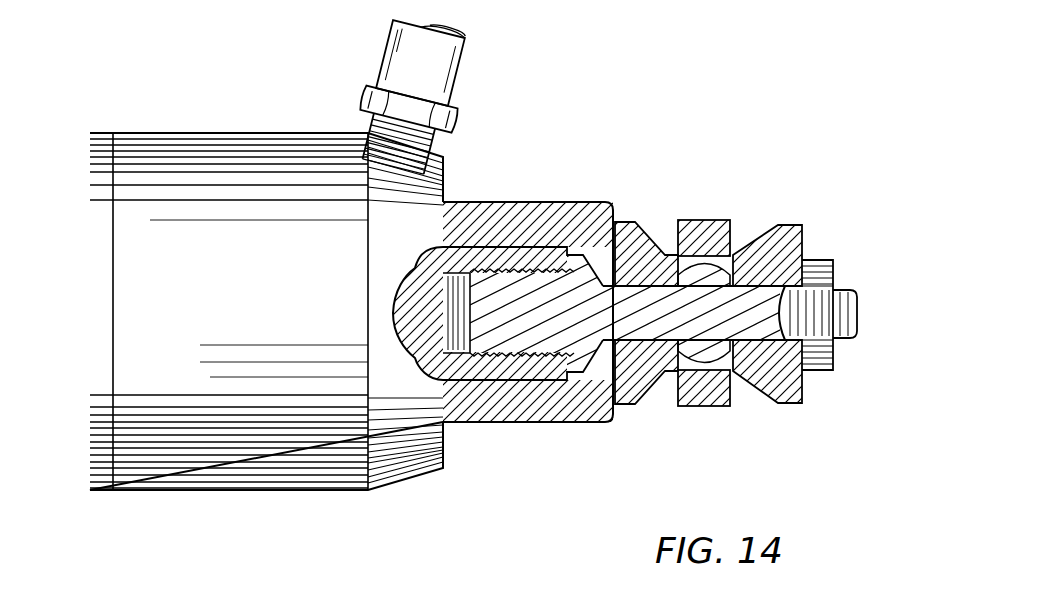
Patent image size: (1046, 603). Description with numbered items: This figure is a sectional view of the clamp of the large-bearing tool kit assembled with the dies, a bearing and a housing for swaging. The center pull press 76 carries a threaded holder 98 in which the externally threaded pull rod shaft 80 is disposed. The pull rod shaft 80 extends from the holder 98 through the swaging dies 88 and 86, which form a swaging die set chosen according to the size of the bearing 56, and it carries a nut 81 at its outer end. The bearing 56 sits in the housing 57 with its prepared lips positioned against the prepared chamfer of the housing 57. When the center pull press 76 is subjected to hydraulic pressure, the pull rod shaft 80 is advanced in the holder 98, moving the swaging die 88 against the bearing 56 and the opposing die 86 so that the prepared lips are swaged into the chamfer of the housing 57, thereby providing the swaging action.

The center pull press 76 is at (140, 283).
The threaded holder 98 is at (500, 252).
The pull rod shaft 80 is at (648, 330).
The swaging die 88 is at (643, 240).
The bearing 56 is at (697, 252).
The housing 57 is at (702, 394).
The swaging die 86 is at (777, 226).
The nut 81 is at (817, 262).